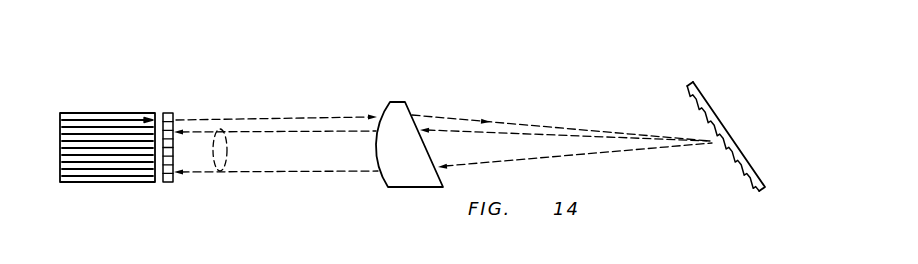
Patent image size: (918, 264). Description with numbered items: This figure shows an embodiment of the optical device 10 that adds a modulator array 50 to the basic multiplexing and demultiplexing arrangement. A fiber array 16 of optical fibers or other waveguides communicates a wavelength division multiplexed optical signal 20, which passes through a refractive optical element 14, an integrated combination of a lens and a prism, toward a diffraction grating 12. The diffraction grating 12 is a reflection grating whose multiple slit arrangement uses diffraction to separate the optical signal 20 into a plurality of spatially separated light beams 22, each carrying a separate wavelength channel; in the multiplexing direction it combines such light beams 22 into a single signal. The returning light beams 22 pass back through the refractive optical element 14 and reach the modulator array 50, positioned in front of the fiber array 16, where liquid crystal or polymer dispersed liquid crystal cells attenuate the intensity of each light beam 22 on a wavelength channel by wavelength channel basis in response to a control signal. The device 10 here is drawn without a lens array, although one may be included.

The optical device 10 is at (278, 80).
The diffraction grating 12 is at (733, 132).
The refractive optical element 14 is at (394, 101).
The fiber array 16 is at (108, 182).
The optical signal 20 is at (103, 113).
The light beams 22 is at (221, 175).
The modulator array 50 is at (165, 113).